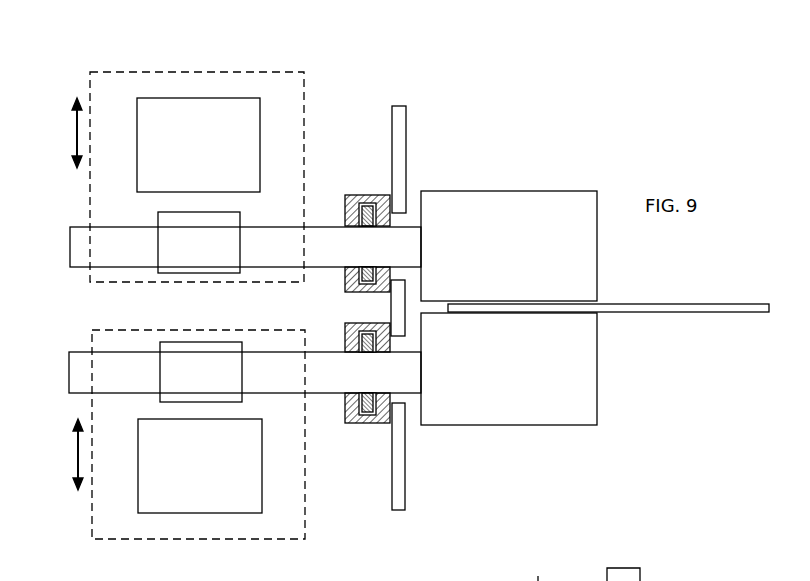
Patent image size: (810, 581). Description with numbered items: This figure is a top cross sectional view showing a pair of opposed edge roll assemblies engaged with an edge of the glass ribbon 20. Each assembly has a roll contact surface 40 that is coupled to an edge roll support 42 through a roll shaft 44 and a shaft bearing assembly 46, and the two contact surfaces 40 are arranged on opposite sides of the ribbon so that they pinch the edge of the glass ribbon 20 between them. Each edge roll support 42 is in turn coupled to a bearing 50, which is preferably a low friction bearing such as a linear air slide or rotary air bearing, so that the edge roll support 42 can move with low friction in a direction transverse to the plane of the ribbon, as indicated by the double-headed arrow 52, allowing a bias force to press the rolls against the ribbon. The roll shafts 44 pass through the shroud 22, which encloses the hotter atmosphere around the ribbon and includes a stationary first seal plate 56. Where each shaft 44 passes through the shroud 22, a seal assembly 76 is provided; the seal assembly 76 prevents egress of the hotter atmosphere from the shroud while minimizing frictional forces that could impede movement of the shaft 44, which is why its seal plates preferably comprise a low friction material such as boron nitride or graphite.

The glass ribbon 20 is at (640, 312).
The shroud 22 is at (405, 125).
The roll contact surface 40 is at (528, 191).
The edge roll support 42 is at (106, 72).
The roll shaft 44 is at (78, 226).
The shaft bearing assembly 46 is at (215, 268).
The bearing 50 is at (262, 103).
The arrow 52 is at (77, 135).
The first seal plate 56 is at (540, 568).
The seal assembly 76 is at (346, 196).